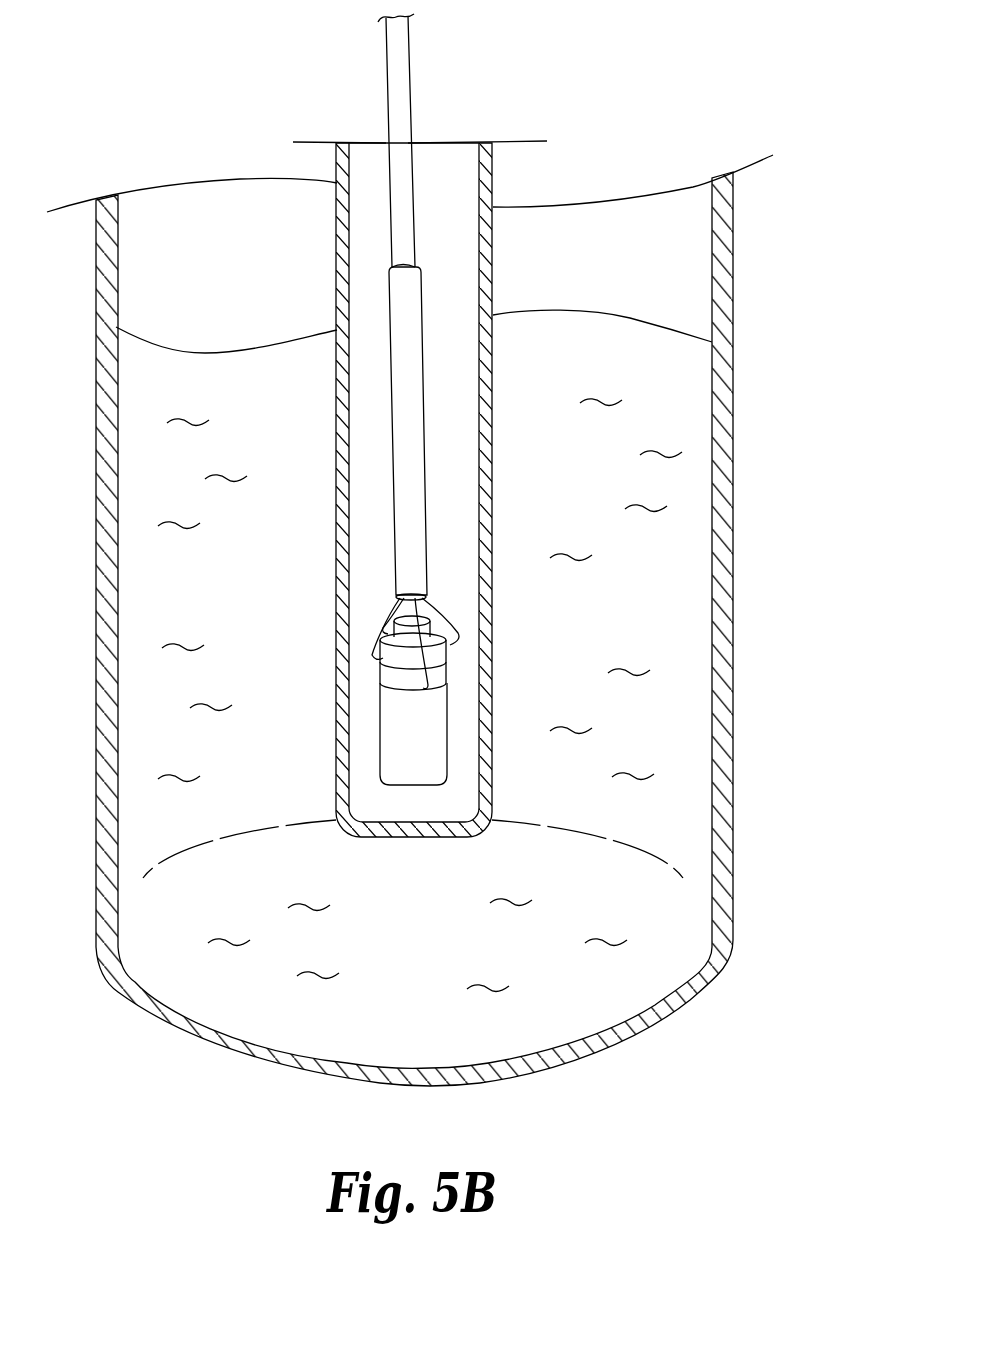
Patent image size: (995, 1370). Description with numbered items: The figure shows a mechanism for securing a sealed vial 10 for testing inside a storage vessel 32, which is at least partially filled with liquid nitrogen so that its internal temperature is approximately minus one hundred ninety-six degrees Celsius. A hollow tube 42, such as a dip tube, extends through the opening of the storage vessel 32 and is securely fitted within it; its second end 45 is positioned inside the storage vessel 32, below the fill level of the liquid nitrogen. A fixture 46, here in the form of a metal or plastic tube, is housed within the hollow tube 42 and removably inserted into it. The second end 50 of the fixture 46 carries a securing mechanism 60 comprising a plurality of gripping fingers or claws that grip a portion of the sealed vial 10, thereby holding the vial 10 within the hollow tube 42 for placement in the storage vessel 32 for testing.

The sealed vial 10 is at (393, 750).
The storage vessel 32 is at (562, 479).
The hollow tube 42 is at (470, 179).
The second end of the hollow tube 45 is at (340, 798).
The fixture 46 is at (395, 113).
The second end of the fixture 50 is at (403, 580).
The securing mechanism 60 is at (457, 638).